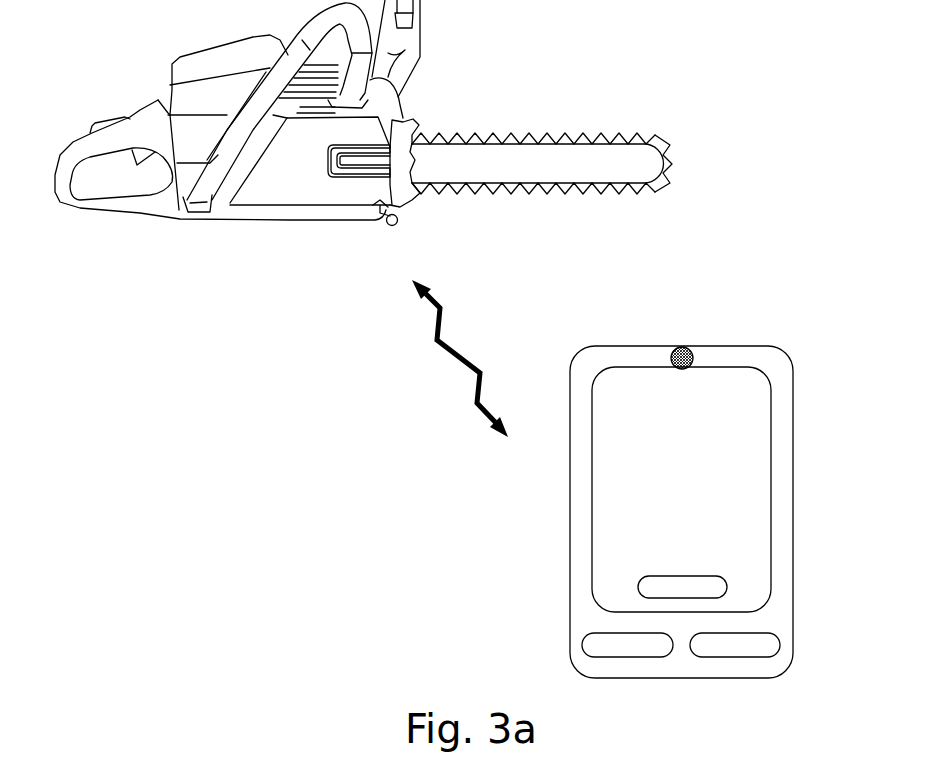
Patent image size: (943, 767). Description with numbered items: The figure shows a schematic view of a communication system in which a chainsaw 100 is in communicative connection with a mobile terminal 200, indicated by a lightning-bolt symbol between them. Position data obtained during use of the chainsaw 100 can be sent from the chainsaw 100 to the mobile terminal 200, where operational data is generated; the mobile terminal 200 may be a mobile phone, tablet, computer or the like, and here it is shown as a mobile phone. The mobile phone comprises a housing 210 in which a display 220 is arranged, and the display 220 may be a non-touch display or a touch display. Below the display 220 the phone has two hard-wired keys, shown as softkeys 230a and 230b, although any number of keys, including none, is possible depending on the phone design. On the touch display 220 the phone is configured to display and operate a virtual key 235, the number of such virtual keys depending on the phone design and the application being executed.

The chainsaw 100 is at (216, 270).
The mobile terminal 200 is at (718, 506).
The housing 210 is at (793, 437).
The display 220 is at (771, 492).
The virtual key 235 is at (728, 590).
The softkey 230a is at (628, 657).
The softkey 230b is at (780, 647).